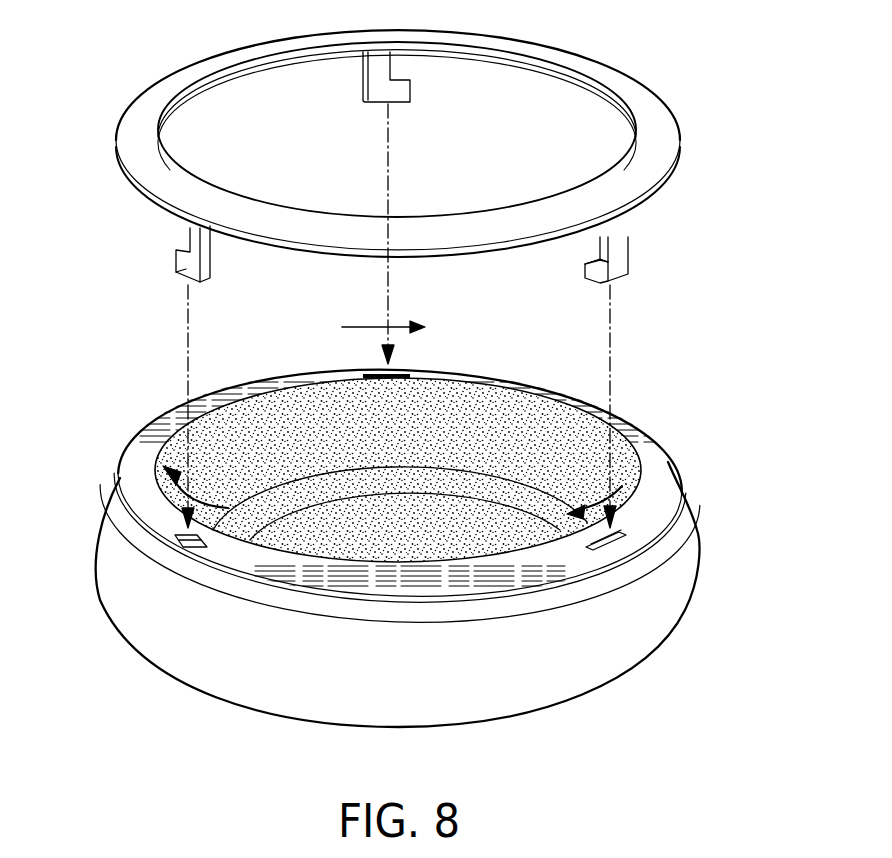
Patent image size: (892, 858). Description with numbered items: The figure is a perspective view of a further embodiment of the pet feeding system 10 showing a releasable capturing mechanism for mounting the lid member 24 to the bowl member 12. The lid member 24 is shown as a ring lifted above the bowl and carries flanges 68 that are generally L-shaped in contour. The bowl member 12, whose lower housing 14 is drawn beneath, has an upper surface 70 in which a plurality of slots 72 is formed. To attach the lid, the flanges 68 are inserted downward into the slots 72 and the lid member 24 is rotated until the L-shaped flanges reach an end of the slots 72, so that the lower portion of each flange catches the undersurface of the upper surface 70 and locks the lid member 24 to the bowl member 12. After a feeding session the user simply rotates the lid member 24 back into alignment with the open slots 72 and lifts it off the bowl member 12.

The lid member 24 is at (648, 97).
The flanges 68 is at (363, 77).
The hydroponic growing device 10 is at (686, 339).
The upper surface 70 is at (663, 462).
The slots 72 is at (183, 533).
The housing lip 14 is at (695, 572).
The bowl member 12 is at (674, 648).